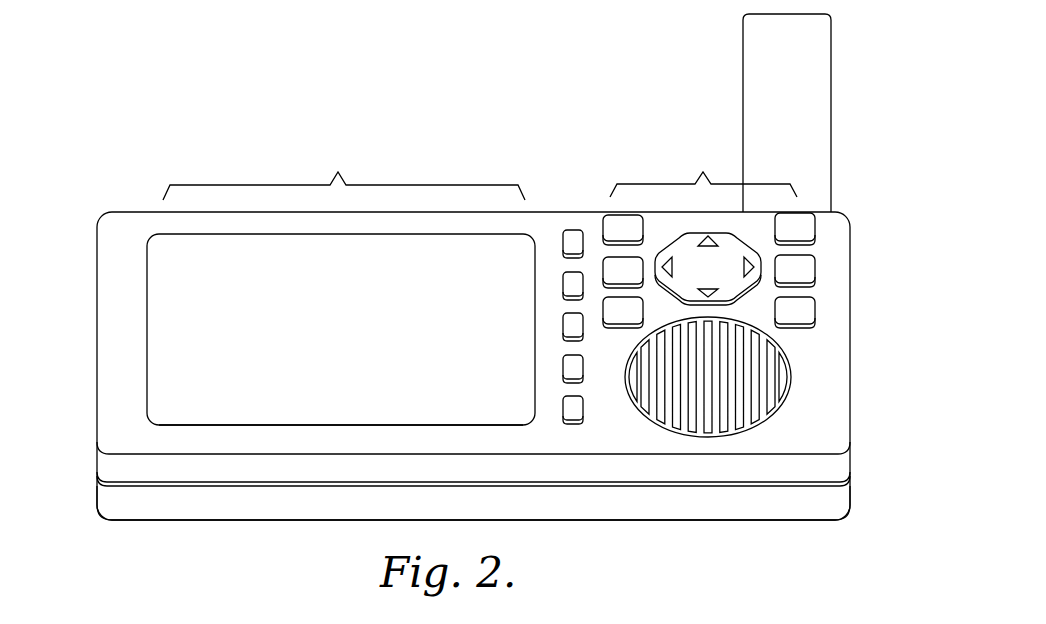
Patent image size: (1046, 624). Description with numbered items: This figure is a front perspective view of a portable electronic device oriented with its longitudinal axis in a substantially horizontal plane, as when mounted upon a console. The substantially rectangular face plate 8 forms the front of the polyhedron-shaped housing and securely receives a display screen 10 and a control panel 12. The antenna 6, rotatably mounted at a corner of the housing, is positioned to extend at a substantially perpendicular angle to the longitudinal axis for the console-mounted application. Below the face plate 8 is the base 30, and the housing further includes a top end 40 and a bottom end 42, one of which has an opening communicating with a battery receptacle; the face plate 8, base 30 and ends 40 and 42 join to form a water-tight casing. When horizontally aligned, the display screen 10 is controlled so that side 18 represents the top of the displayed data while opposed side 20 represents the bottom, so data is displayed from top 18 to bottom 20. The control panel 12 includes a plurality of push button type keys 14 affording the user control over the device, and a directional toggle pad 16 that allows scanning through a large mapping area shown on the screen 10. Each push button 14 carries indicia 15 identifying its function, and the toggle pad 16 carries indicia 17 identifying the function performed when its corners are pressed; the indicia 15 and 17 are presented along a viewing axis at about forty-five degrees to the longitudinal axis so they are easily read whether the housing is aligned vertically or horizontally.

The antenna 6 is at (770, 57).
The face plate 8 is at (137, 212).
The display screen 10 is at (341, 286).
The control panel 12 is at (704, 286).
The push button type keys 14 is at (704, 291).
The indicia 15 is at (775, 226).
The directional toggle pad 16 is at (744, 296).
The indicia 17 is at (701, 237).
The side 18 is at (245, 236).
The opposed side 20 is at (233, 425).
The base 30 is at (658, 519).
The top end 40 is at (850, 385).
The bottom end 42 is at (97, 285).